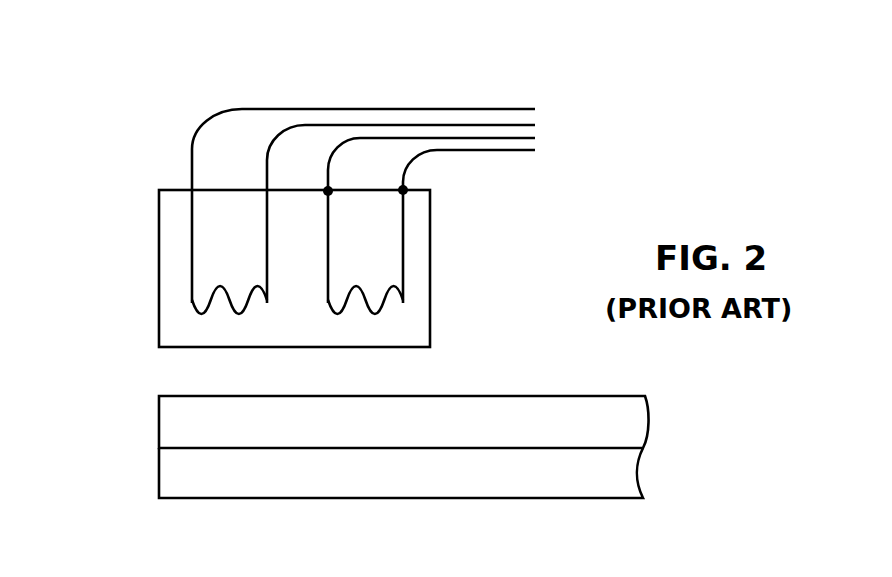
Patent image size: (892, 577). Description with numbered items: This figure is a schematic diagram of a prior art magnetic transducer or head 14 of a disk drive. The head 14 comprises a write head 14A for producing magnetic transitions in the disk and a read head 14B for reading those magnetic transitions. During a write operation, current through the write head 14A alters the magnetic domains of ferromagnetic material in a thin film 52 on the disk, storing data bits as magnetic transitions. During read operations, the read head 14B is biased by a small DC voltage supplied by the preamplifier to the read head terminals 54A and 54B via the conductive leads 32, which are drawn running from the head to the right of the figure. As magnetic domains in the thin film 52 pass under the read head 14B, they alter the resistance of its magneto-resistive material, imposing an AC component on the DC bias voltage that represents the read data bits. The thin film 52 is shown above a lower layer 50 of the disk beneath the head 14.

The conductive leads 32 is at (423, 108).
The magnetic transducer or head 14 is at (159, 243).
The write head 14A is at (192, 290).
The read head 14B is at (403, 288).
The read head terminal 54A is at (328, 191).
The read head terminal 54B is at (403, 190).
The thin film 52 is at (168, 425).
The lower plate / substrate 50 is at (168, 473).